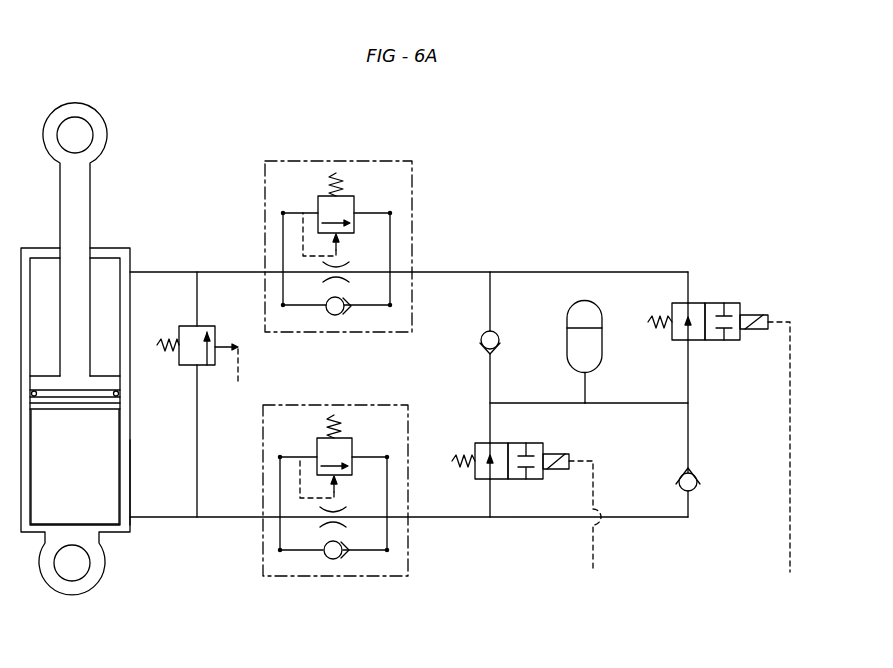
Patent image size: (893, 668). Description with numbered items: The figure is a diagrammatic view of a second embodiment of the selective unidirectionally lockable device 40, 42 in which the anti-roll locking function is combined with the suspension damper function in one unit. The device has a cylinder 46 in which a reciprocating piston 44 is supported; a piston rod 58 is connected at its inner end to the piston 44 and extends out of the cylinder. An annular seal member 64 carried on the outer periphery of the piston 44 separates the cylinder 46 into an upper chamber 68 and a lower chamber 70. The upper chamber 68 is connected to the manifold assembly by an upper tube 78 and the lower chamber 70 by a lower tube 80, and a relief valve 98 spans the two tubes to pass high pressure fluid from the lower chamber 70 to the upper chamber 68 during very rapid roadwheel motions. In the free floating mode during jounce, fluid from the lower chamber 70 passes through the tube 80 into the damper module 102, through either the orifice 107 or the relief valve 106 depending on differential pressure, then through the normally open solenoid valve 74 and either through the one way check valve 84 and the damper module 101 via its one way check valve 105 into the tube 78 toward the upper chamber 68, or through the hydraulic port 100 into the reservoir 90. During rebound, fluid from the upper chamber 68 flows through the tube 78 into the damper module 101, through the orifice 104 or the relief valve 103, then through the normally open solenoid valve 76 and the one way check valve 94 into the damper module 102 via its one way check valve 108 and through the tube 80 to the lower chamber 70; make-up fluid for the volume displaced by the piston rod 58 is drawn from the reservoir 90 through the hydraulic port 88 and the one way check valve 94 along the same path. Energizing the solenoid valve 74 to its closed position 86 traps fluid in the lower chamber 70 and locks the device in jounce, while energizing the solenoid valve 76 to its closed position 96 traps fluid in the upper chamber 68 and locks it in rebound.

The piston rod 58 is at (91, 172).
The selective unidirectionally lockable device 40 is at (107, 390).
The selective unidirectionally lockable device 42 is at (113, 247).
The upper tube 78 is at (147, 271).
The lower tube 80 is at (168, 517).
The upper chamber 68 is at (105, 306).
The lower chamber 70 is at (62, 471).
The annular seal member 64 is at (119, 393).
The piston 44 is at (105, 410).
The cylinder 46 is at (130, 492).
The relief valve 98 is at (212, 326).
The damper module 101 is at (412, 182).
The relief valve 103 is at (355, 204).
The orifice 104 is at (350, 271).
The one way check valve 105 is at (335, 316).
The damper module 102 is at (408, 570).
The relief valve 106 is at (317, 447).
The orifice 107 is at (318, 521).
The one way check valve 108 is at (335, 560).
The one way check valve 84 is at (480, 345).
The reservoir 90 is at (570, 305).
The hydraulic port 100 is at (532, 403).
The hydraulic port 88 is at (632, 405).
The normally open solenoid valve 74 is at (479, 478).
The closed position of solenoid valve 86 is at (530, 479).
The normally open solenoid valve 76 is at (700, 303).
The closed position of solenoid valve 96 is at (724, 340).
The one way check valve 94 is at (698, 480).